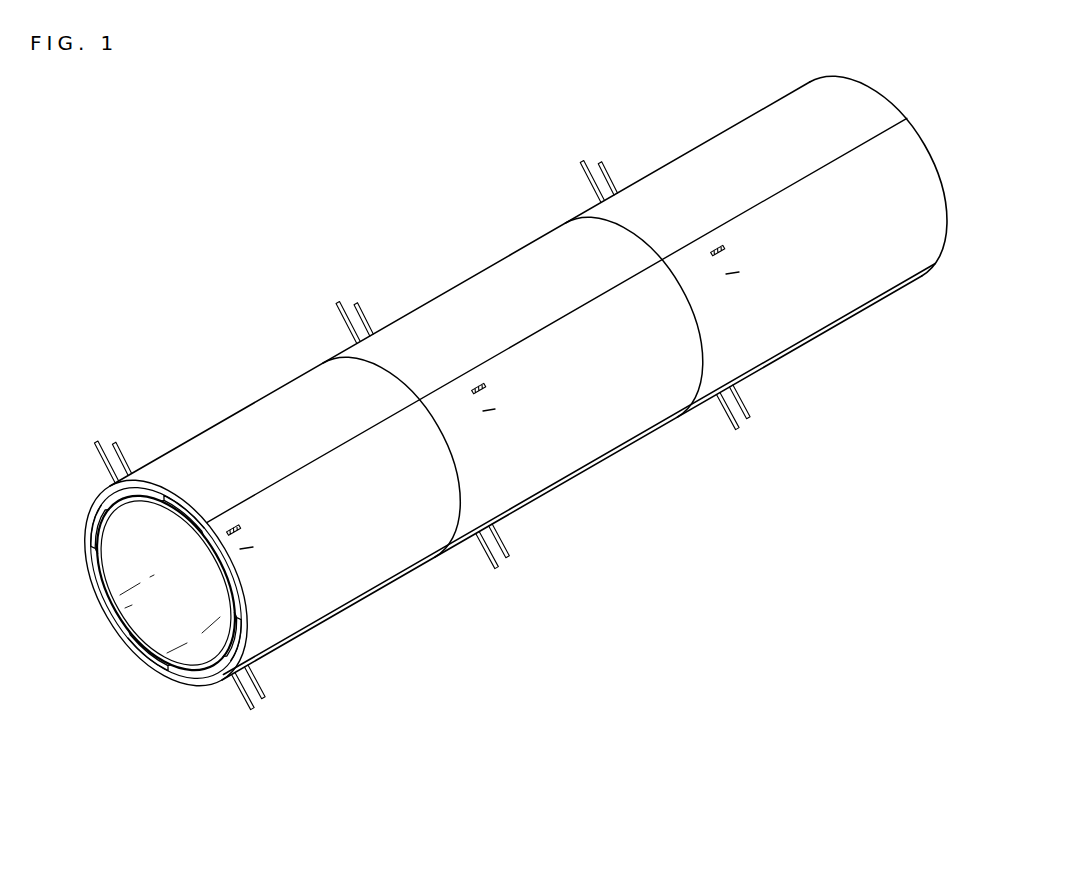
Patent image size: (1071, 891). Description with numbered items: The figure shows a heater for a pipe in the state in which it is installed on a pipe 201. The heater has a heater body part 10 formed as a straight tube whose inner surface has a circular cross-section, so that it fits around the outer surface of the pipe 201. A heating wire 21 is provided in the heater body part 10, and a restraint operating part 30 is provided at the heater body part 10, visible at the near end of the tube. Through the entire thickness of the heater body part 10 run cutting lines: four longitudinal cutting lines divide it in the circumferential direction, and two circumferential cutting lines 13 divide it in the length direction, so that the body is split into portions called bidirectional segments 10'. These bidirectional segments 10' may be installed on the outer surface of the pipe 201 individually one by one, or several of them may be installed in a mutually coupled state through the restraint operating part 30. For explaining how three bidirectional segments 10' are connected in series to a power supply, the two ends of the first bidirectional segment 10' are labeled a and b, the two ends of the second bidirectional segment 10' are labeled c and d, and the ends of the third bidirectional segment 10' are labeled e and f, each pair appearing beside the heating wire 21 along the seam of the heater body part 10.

The heater body part 10 is at (545, 364).
The bidirectional segment 10' is at (547, 381).
The circumferential cutting line 13 is at (391, 371).
The heating wire 21 is at (337, 304).
The restraint operating part 30 is at (92, 522).
The pipe 201 is at (112, 611).
The end of first bidirectional segment a is at (244, 522).
The end of first bidirectional segment b is at (256, 544).
The end of second bidirectional segment c is at (487, 384).
The end of second bidirectional segment d is at (498, 407).
The end of third bidirectional segment e is at (727, 242).
The end of third bidirectional segment f is at (740, 265).